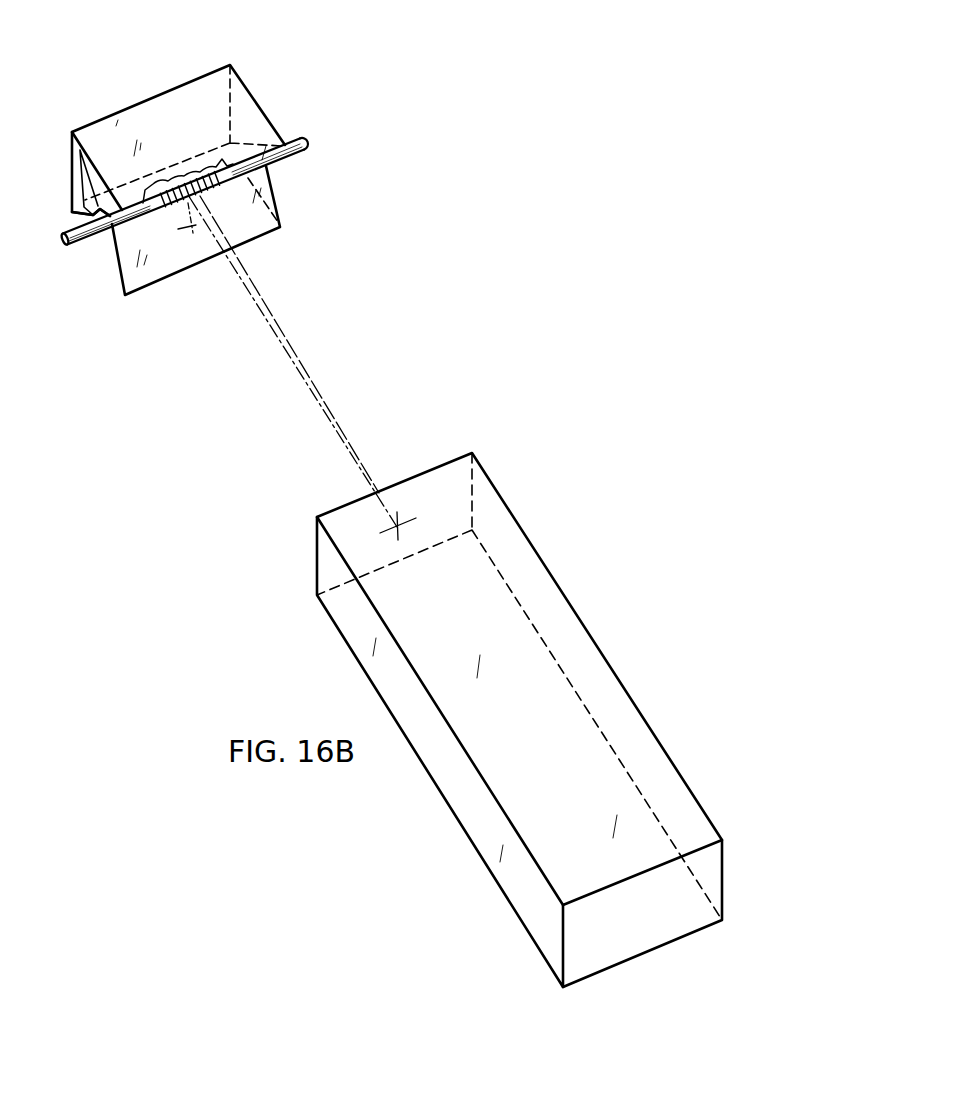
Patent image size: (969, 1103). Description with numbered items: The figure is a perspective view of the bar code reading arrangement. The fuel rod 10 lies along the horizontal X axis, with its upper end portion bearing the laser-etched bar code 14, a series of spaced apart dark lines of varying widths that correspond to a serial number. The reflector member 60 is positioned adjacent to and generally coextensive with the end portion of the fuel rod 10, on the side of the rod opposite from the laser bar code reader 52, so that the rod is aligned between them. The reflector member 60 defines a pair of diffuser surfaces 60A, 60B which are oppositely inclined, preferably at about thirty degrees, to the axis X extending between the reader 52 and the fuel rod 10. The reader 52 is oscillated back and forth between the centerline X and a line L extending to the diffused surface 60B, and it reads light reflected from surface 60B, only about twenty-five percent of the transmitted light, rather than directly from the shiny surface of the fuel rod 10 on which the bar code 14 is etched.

The fuel rod 10 is at (283, 138).
The bar code 14 is at (194, 197).
The laser bar code reader 52 is at (565, 593).
The reflector member 60 is at (221, 184).
The diffuser surface 60A is at (111, 213).
The diffuser surface 60B is at (257, 218).
The line L is at (273, 336).
The horizontal X axis X is at (313, 389).